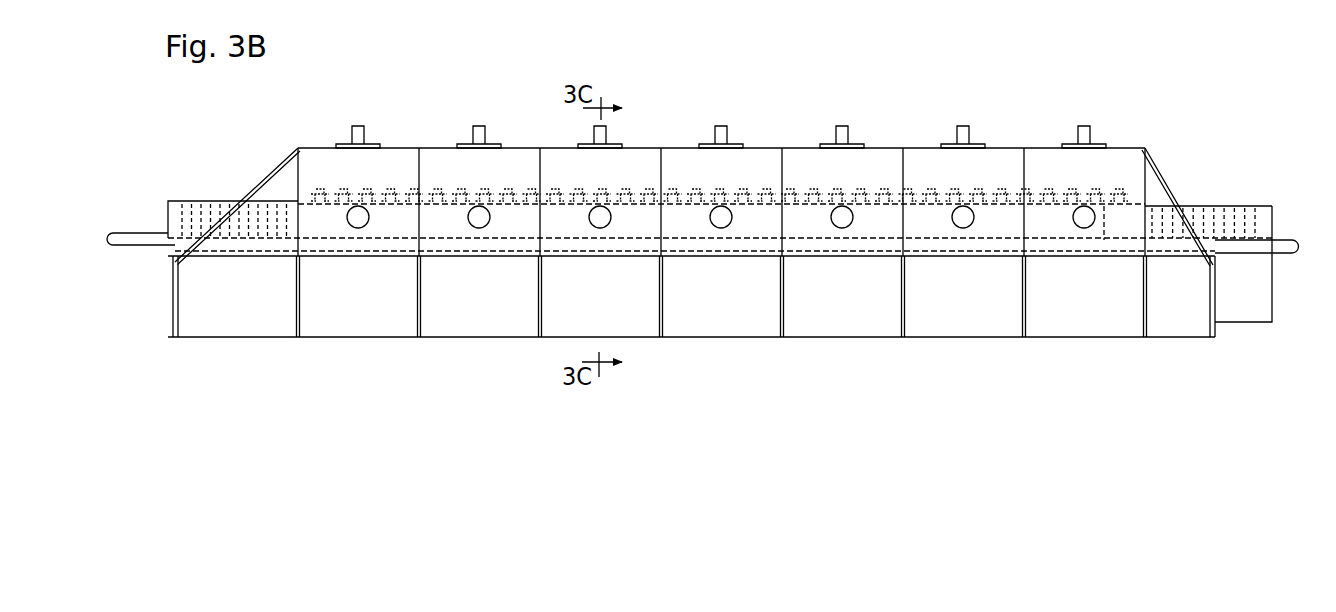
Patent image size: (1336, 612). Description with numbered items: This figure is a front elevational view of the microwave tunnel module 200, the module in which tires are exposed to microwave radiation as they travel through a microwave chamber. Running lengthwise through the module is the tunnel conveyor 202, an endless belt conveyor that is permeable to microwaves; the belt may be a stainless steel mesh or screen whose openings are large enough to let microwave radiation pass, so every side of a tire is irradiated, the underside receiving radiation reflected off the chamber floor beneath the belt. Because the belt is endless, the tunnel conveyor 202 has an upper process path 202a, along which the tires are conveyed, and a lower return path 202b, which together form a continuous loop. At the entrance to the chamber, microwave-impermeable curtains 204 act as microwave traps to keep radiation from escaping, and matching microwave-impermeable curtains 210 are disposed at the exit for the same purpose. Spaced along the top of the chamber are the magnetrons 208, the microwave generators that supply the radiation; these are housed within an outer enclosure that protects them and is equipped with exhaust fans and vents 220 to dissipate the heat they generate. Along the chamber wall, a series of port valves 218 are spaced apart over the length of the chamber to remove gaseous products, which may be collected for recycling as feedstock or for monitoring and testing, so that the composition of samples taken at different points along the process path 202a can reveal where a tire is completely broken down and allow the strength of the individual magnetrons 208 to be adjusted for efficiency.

The microwave tunnel module 200 is at (1174, 56).
The tunnel conveyor 202 is at (136, 233).
The process path 202a is at (1107, 204).
The return path 202b is at (1088, 256).
The microwave-impermeable curtains 204 is at (218, 200).
The magnetrons 208 is at (461, 189).
The microwave-impermeable curtains 210 is at (1197, 206).
The port valves 218 is at (596, 222).
The exhaust fans and vents 220 is at (595, 130).